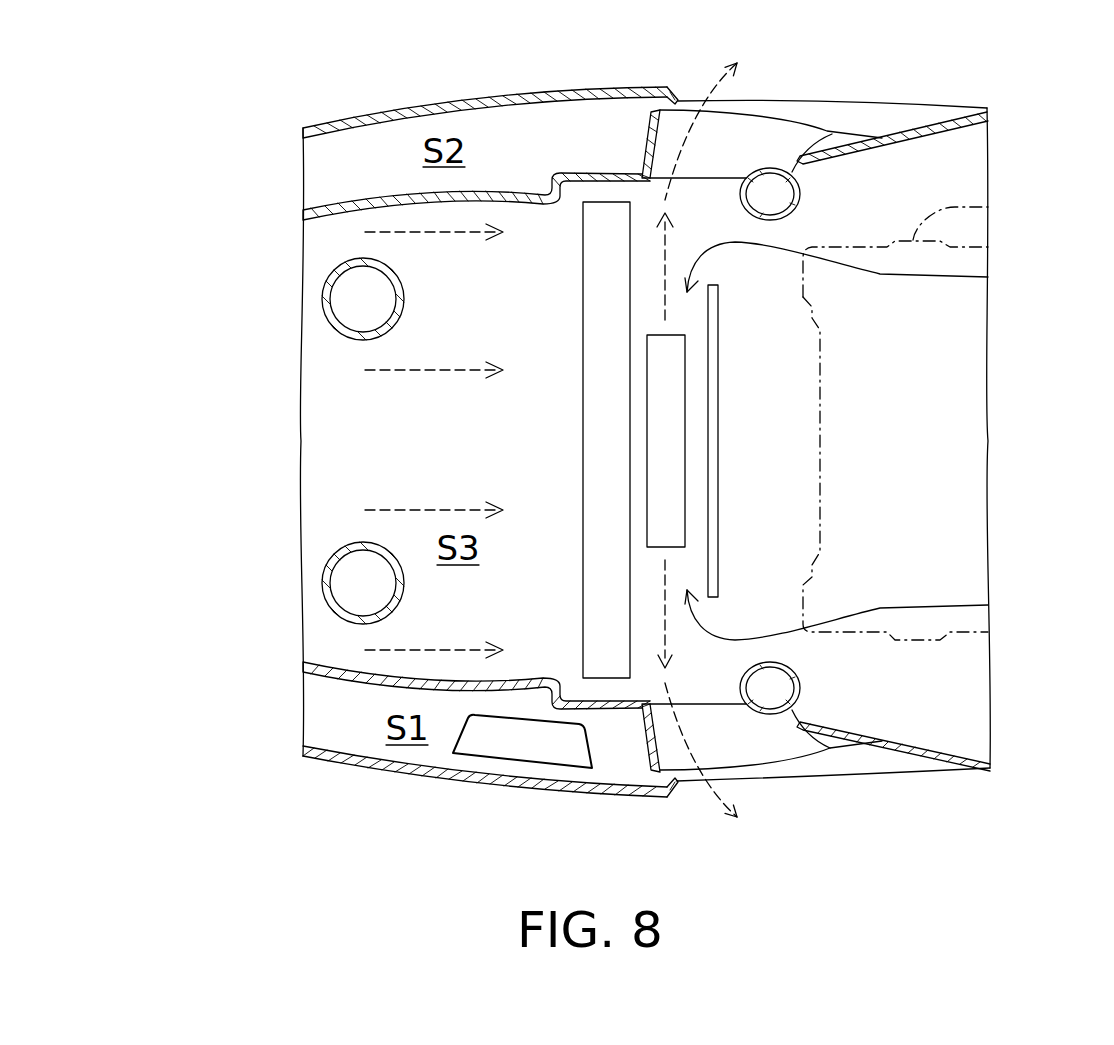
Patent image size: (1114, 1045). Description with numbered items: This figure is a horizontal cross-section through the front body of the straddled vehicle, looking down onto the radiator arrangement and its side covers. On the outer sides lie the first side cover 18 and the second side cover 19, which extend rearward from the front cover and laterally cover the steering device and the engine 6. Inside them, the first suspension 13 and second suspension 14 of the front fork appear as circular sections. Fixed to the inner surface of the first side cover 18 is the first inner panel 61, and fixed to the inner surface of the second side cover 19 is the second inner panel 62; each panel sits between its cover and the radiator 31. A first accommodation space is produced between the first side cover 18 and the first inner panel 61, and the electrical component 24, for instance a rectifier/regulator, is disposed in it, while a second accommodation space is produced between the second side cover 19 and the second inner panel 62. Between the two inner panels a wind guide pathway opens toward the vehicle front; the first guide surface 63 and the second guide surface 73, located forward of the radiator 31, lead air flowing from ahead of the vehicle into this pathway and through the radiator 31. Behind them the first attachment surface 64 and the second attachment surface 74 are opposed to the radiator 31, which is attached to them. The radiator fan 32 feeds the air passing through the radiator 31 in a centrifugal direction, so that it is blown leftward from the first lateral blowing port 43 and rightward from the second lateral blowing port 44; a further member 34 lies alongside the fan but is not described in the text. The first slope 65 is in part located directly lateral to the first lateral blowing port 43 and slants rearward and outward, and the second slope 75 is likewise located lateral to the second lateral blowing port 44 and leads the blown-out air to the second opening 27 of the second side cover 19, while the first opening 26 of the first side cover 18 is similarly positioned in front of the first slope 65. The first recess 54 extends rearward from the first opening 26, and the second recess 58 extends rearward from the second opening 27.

The engine 6 is at (988, 207).
The first suspension 13 is at (322, 581).
The second suspension 14 is at (322, 300).
The first side cover 18 is at (588, 792).
The second side cover 19 is at (447, 98).
The electrical component 24 is at (532, 743).
The first opening 26 is at (828, 758).
The second opening 27 is at (828, 128).
The radiator 31 is at (583, 403).
The radiator fan 32 is at (647, 465).
The third rib 34 is at (718, 430).
The first lateral blowing port 43 is at (988, 605).
The second lateral blowing port 44 is at (988, 277).
The first recess 54 is at (922, 752).
The second recess 58 is at (922, 128).
The first inner panel 61 is at (459, 714).
The second inner panel 62 is at (503, 160).
The first guide surface 63 is at (381, 690).
The first attachment surface 64 is at (607, 707).
The first slope 65 is at (763, 747).
The second guide surface 73 is at (381, 192).
The second attachment surface 74 is at (607, 172).
The second slope 75 is at (763, 137).